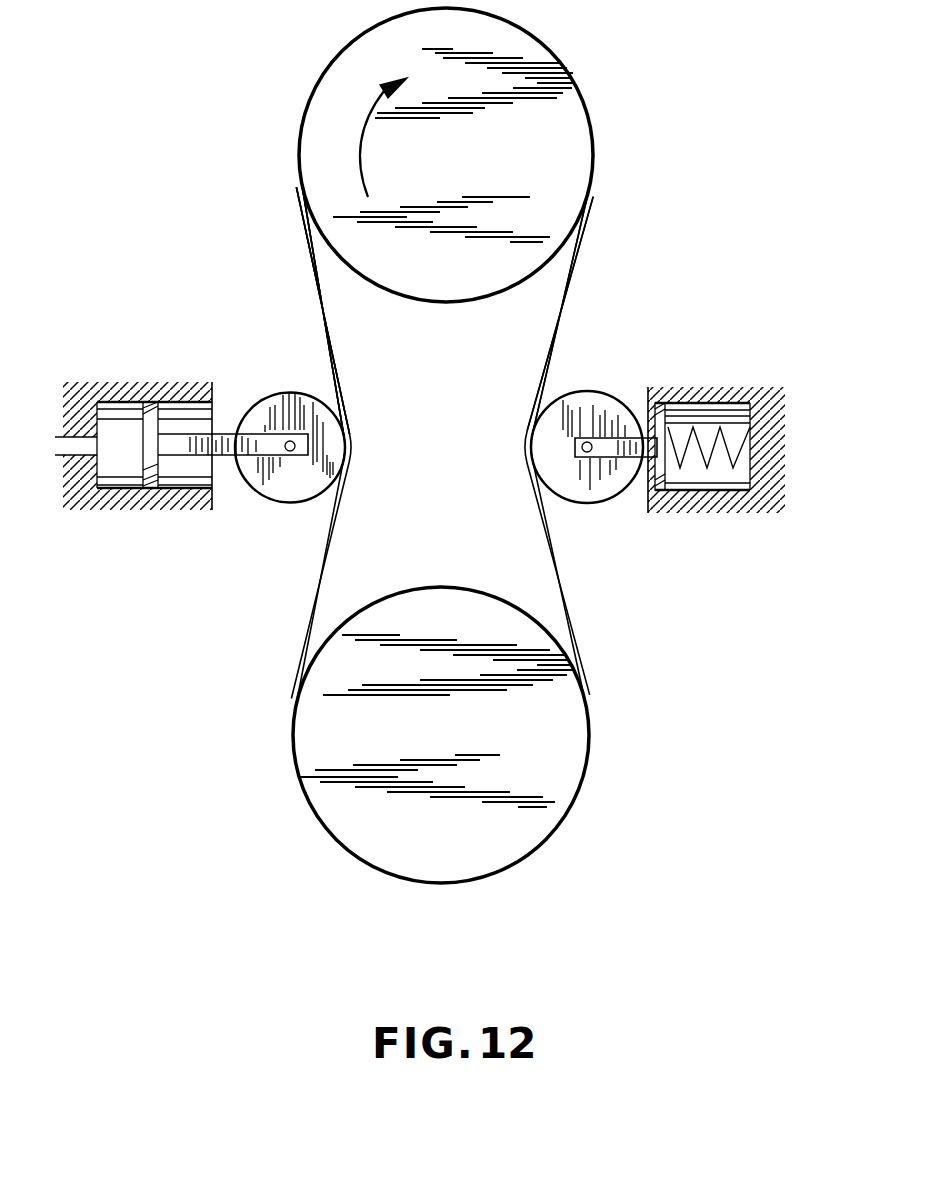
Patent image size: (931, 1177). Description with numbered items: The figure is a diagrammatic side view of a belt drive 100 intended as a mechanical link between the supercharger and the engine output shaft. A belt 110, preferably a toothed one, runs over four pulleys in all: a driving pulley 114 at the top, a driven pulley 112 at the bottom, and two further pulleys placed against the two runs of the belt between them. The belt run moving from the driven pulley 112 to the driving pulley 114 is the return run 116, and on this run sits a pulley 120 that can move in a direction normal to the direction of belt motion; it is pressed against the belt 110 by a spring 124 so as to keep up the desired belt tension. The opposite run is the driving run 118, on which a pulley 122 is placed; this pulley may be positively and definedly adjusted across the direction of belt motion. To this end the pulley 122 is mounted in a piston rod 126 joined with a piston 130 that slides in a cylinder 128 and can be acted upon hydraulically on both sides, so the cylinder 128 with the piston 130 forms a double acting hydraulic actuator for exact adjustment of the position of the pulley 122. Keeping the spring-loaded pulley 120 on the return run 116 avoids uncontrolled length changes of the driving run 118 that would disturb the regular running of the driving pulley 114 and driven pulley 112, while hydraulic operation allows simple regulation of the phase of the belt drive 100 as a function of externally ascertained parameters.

The belt drive 100 is at (432, 443).
The belt 110 is at (320, 299).
The driven pulley 112 is at (548, 812).
The driving pulley 114 is at (576, 90).
The return run 116 is at (580, 258).
The driving run 118 is at (308, 240).
The pulley 120 is at (607, 407).
The pulley 122 is at (307, 473).
The spring 124 is at (708, 428).
The piston rod 126 is at (184, 499).
The cylinder 128 is at (122, 498).
The piston 130 is at (153, 402).